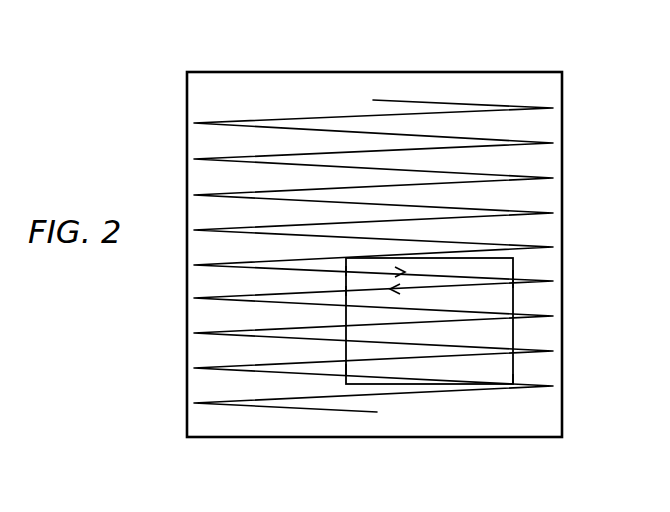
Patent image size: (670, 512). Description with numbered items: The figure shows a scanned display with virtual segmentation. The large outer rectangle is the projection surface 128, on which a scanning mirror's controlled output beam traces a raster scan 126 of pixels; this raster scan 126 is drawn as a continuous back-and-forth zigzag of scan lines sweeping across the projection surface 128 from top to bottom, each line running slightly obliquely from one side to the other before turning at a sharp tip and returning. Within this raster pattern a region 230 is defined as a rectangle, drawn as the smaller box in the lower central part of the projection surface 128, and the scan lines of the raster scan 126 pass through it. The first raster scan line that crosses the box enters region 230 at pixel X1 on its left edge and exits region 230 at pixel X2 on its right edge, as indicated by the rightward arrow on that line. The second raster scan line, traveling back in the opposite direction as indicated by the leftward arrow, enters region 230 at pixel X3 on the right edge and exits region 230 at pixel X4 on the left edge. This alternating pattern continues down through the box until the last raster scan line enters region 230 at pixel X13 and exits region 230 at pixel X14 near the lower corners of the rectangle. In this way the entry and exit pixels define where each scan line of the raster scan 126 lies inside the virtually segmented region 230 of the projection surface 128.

The projection surface 128 is at (437, 72).
The raster scan 126 is at (250, 407).
The region 230 is at (435, 385).
The pixel X1 is at (346, 275).
The pixel X2 is at (513, 277).
The pixel X3 is at (513, 281).
The pixel X4 is at (346, 292).
The pixel X13 is at (346, 370).
The pixel X14 is at (513, 383).